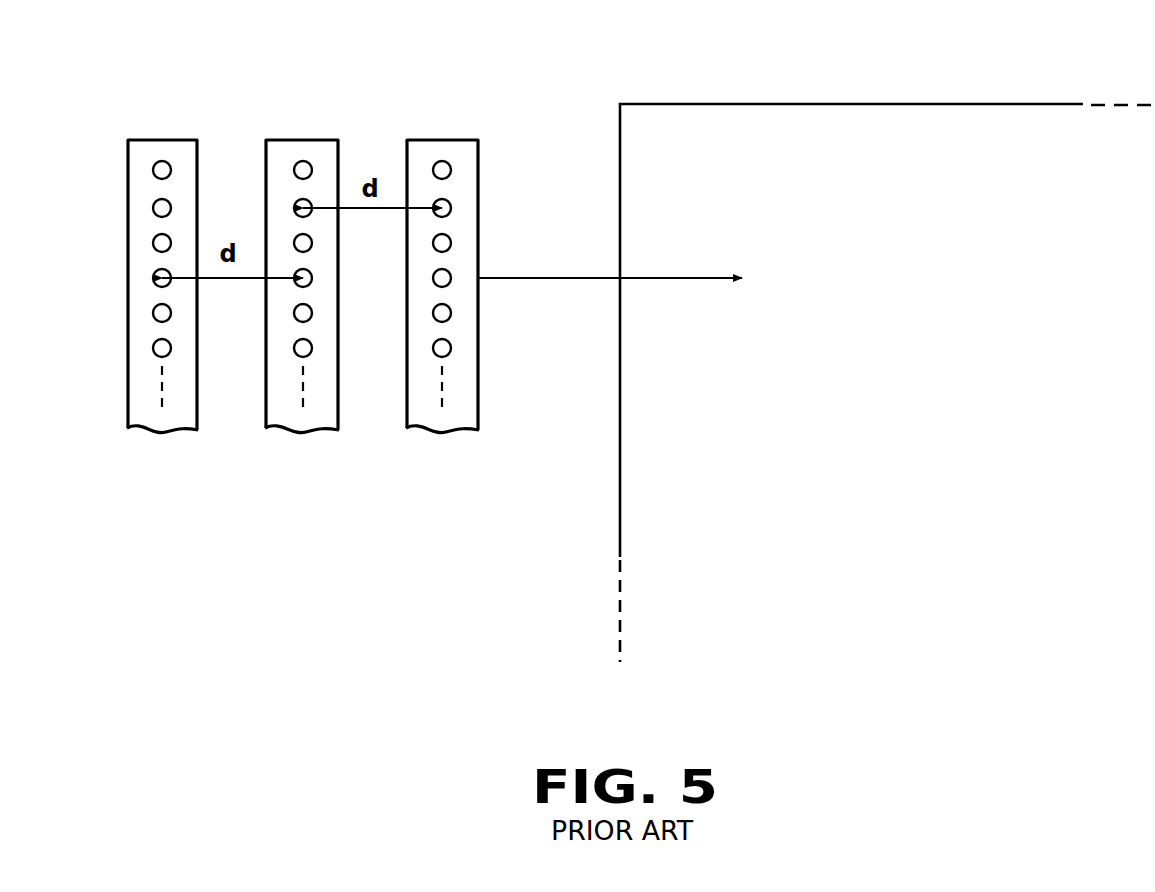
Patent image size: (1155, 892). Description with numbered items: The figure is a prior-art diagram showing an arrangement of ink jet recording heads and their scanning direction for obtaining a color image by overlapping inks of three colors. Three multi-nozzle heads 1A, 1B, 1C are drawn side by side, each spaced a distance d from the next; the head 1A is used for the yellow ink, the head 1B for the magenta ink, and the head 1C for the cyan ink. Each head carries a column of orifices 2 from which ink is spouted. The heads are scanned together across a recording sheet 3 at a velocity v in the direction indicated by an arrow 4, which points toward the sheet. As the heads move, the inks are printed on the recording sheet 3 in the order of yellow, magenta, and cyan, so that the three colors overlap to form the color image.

The multi-nozzle head 1A is at (430, 138).
The multi-nozzle head 1B is at (304, 138).
The multi-nozzle head 1C is at (170, 138).
The orifices 2 is at (451, 168).
The recording sheet 3 is at (806, 104).
The arrow 4 is at (673, 278).